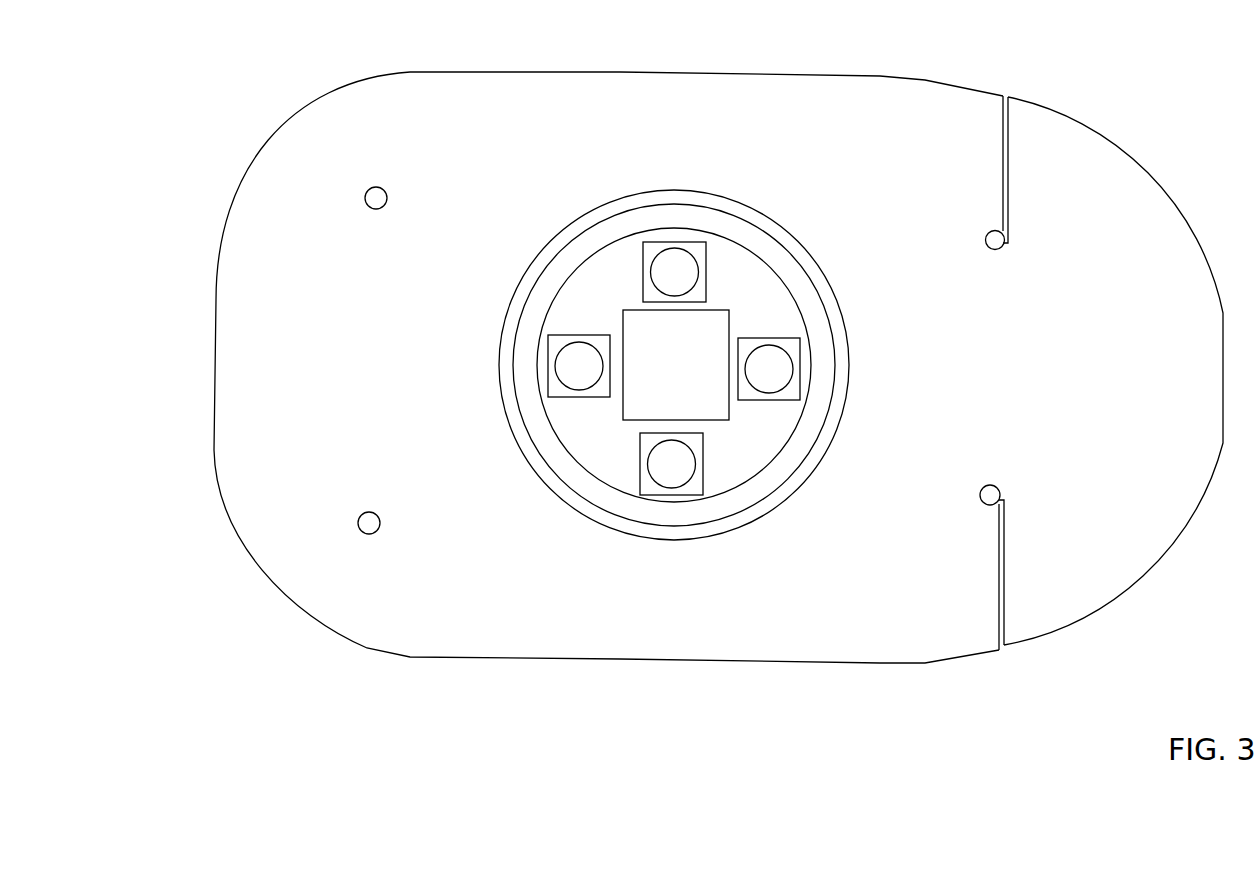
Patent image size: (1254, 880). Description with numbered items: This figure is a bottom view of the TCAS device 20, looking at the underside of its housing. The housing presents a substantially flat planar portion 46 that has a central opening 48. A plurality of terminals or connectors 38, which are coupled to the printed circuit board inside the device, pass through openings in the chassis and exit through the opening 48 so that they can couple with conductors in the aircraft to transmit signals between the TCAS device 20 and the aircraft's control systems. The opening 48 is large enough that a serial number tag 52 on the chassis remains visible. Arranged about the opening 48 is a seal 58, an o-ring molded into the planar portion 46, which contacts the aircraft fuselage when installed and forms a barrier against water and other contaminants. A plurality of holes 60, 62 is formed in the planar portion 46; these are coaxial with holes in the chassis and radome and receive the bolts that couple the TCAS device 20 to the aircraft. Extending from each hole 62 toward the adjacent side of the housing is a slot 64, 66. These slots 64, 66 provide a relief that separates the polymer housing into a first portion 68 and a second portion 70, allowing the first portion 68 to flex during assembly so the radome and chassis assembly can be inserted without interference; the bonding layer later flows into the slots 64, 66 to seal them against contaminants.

The TCAS device 20 is at (410, 730).
The connectors 38 is at (643, 262).
The planar portion 46 is at (540, 154).
The opening 48 is at (614, 304).
The serial number tag 52 is at (729, 312).
The seal 58 is at (548, 489).
The holes 60 is at (368, 186).
The holes 62 is at (985, 240).
The slot 64 is at (1008, 175).
The slot 66 is at (1005, 587).
The first portion 68 is at (1118, 382).
The second portion 70 is at (949, 369).